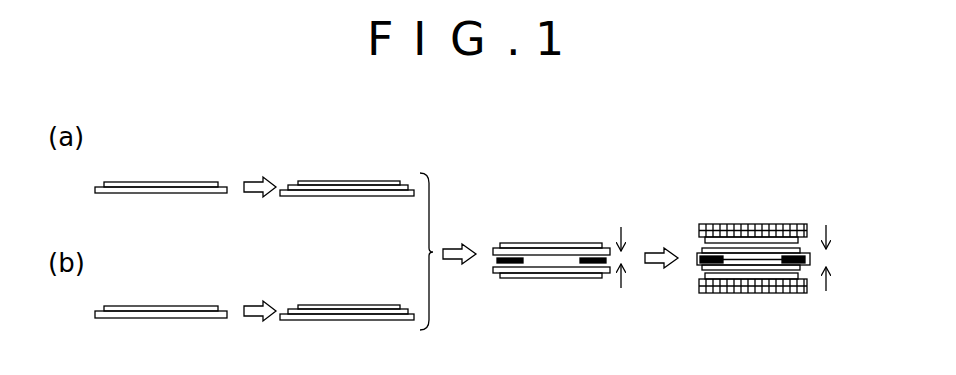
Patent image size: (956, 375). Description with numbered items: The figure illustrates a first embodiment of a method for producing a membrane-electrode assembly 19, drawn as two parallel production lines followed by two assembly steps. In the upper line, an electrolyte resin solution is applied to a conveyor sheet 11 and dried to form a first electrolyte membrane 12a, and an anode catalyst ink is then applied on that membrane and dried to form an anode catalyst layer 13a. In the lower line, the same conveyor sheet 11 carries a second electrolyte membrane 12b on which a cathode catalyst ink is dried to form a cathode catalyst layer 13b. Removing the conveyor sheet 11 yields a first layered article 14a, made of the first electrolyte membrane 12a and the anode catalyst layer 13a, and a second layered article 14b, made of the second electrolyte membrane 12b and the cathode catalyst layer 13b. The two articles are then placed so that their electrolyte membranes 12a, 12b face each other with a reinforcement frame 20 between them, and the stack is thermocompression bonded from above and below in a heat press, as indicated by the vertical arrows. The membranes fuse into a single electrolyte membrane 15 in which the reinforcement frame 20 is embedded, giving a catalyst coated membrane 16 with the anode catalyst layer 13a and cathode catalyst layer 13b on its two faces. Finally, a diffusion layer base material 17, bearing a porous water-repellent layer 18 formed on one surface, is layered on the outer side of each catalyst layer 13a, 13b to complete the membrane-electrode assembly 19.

The conveyor sheet 11 is at (196, 193).
The first electrolyte membrane 12a is at (157, 184).
The second electrolyte membrane 12b is at (157, 308).
The anode catalyst layer 13a is at (314, 182).
The cathode catalyst layer 13b is at (316, 306).
The first layered article 14a is at (345, 179).
The second layered article 14b is at (345, 303).
The electrolyte membrane 15 is at (698, 262).
The catalyst coated membrane 16 is at (691, 252).
The diffusion layer base material 17 is at (743, 225).
The porous water-repellent layer 18 is at (724, 240).
The membrane-electrode assembly 19 is at (821, 216).
The reinforcement frame 20 is at (497, 260).